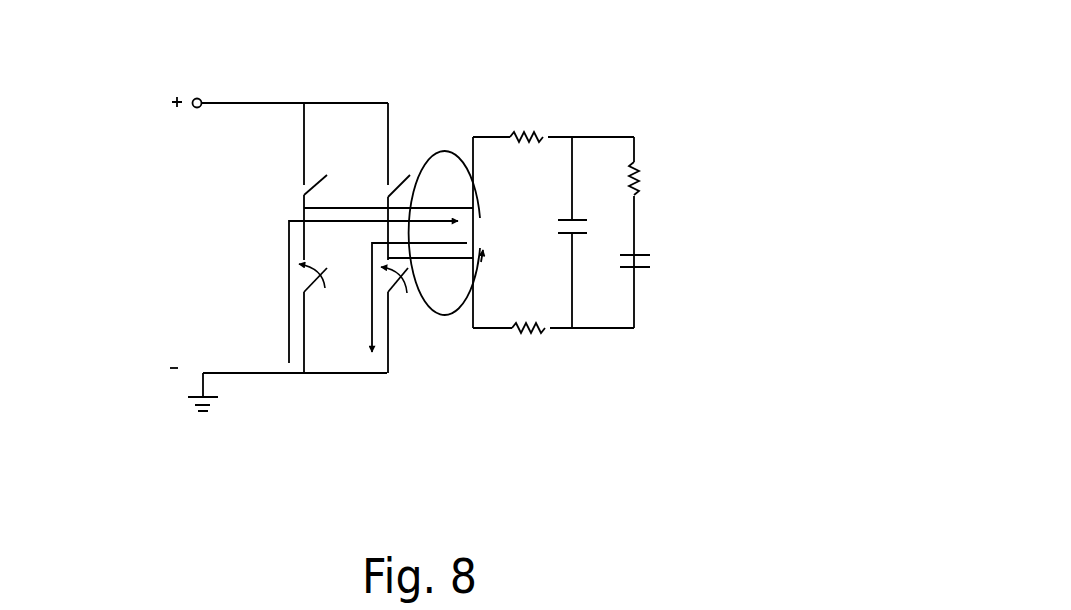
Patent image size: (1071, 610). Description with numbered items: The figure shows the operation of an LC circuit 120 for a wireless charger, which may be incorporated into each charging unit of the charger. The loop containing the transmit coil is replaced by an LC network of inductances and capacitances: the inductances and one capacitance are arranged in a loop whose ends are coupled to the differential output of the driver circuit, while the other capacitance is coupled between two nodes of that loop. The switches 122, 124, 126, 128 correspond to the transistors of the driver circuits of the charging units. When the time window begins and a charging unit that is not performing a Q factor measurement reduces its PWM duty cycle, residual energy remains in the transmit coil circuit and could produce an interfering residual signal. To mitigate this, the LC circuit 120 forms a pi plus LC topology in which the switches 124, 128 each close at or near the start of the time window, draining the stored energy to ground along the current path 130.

The LC circuit 120 is at (642, 103).
The switch 122 is at (316, 160).
The switch 124 is at (300, 275).
The switch 126 is at (402, 162).
The switch 128 is at (400, 302).
The current path 130 is at (285, 238).